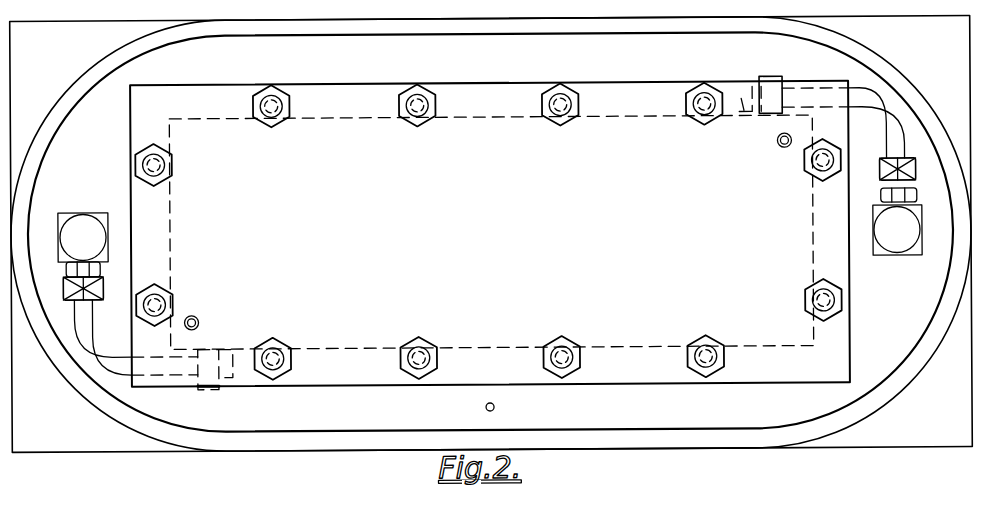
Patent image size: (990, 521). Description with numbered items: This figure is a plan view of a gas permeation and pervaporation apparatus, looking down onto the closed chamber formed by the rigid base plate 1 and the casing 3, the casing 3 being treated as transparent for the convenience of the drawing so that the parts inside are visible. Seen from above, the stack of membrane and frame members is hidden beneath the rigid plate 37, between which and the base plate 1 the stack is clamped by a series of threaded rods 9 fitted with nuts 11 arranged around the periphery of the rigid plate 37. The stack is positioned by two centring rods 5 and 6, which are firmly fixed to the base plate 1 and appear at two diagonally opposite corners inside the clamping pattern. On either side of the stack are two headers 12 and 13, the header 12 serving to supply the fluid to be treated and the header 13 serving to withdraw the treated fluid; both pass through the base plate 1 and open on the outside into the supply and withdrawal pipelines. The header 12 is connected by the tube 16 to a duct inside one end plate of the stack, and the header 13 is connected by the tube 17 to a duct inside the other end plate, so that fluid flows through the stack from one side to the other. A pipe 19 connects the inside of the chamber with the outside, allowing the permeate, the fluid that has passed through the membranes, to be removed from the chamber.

The base plate 1 is at (81, 40).
The casing 3 is at (138, 48).
The centring rod 5 is at (199, 321).
The centring rod 6 is at (777, 144).
The threaded rod 9 is at (708, 350).
The nut 11 is at (291, 86).
The header 12 is at (98, 241).
The header 13 is at (903, 239).
The tube 16 is at (93, 345).
The tube 17 is at (900, 124).
The pipe 19 is at (491, 403).
The rigid plate 37 is at (634, 95).